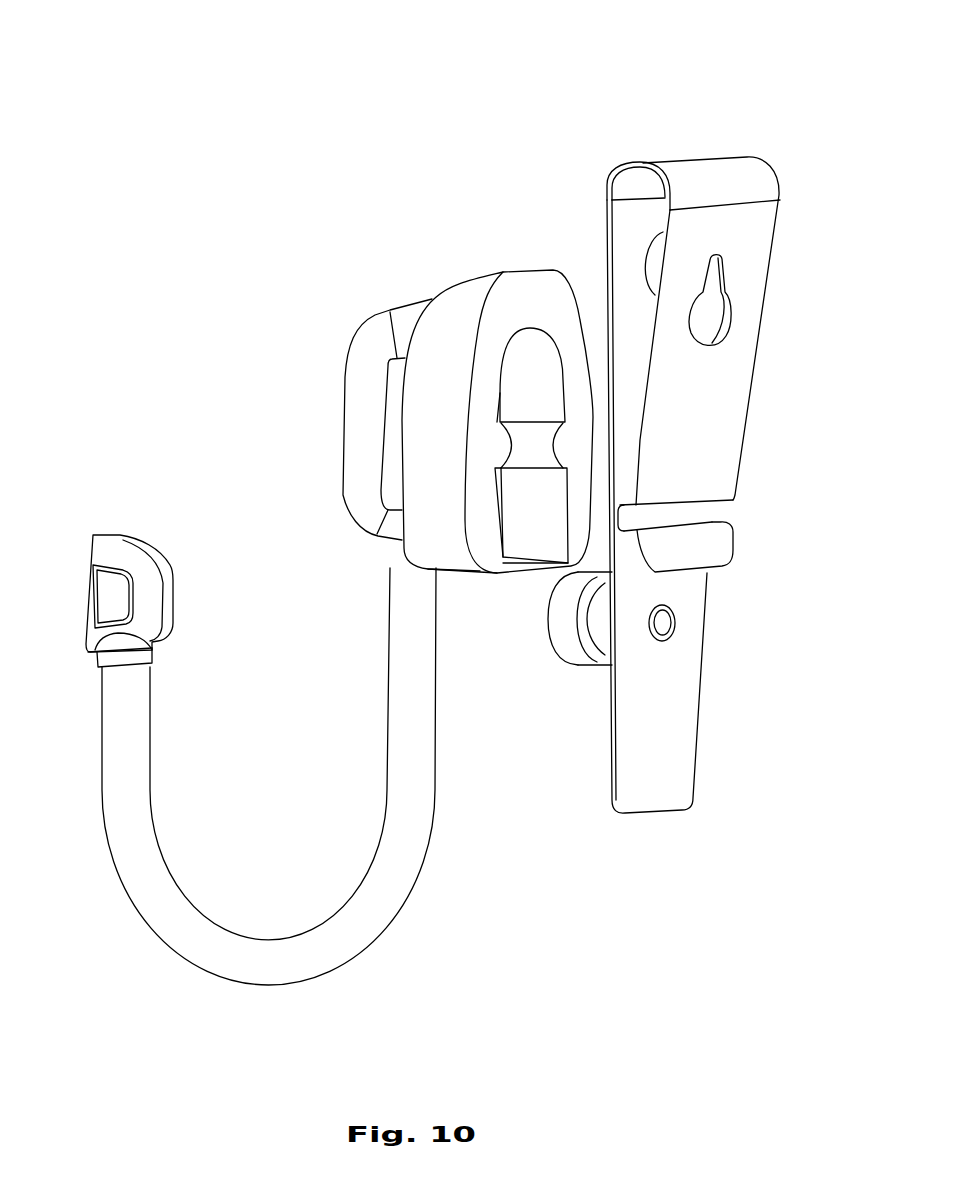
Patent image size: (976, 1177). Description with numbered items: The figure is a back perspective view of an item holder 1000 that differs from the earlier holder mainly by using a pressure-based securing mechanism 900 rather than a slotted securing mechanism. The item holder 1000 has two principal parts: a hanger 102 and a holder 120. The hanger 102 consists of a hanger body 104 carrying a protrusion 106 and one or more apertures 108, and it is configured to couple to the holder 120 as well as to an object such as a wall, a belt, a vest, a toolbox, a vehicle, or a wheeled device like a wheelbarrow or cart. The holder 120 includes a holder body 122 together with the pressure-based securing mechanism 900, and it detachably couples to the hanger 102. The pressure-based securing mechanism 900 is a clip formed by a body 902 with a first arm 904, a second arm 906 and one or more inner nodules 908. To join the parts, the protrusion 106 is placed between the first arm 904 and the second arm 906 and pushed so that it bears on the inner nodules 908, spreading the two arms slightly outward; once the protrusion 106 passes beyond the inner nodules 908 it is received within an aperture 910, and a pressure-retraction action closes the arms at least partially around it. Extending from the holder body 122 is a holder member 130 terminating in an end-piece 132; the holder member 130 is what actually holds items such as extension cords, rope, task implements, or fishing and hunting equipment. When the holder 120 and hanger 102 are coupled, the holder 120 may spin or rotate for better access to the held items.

The item holder 1000 is at (205, 48).
The holder 120 is at (220, 360).
The holder body 122 is at (405, 300).
The holder member 130 is at (120, 873).
The end-piece 132 is at (125, 533).
The pressure-based securing mechanism 900 is at (547, 225).
The body 902 is at (477, 278).
The first arm 904 is at (452, 560).
The second arm 906 is at (537, 563).
The inner nodules 908 is at (503, 467).
The aperture 910 is at (510, 389).
The hanger 102 is at (650, 852).
The hanger body 104 is at (737, 417).
The protrusion 106 is at (573, 667).
The apertures 108 is at (662, 242).